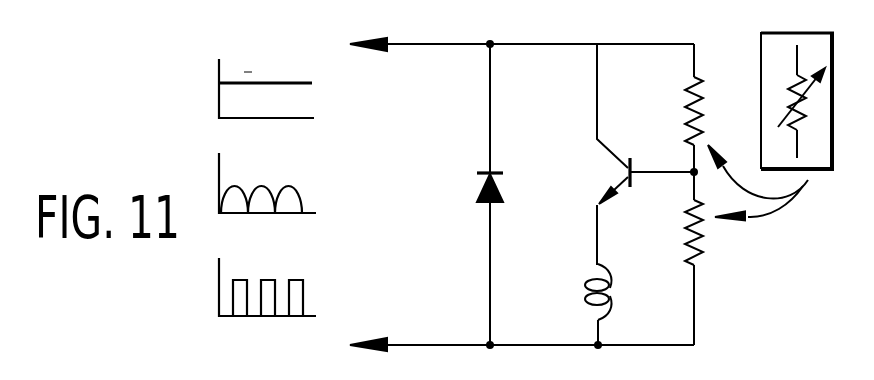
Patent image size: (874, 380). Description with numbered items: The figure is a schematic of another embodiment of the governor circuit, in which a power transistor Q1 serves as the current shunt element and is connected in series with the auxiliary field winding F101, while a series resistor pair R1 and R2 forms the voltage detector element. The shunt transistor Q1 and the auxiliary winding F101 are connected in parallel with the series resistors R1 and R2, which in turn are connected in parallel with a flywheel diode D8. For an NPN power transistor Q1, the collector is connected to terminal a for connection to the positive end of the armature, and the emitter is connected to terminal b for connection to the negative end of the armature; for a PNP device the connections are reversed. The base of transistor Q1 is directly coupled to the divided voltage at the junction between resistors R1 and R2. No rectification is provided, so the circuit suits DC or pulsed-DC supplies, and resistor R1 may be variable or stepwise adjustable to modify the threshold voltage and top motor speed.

The terminal a is at (506, 41).
The terminal b is at (506, 346).
The flywheel diode D8 is at (462, 194).
The power transistor Q1 is at (629, 154).
The resistor R1 is at (714, 108).
The resistor R2 is at (714, 258).
The auxiliary field winding F101 is at (633, 306).